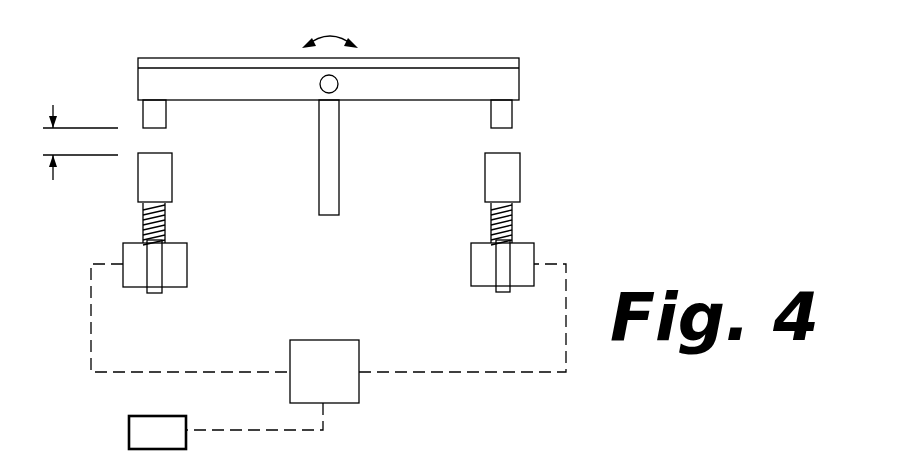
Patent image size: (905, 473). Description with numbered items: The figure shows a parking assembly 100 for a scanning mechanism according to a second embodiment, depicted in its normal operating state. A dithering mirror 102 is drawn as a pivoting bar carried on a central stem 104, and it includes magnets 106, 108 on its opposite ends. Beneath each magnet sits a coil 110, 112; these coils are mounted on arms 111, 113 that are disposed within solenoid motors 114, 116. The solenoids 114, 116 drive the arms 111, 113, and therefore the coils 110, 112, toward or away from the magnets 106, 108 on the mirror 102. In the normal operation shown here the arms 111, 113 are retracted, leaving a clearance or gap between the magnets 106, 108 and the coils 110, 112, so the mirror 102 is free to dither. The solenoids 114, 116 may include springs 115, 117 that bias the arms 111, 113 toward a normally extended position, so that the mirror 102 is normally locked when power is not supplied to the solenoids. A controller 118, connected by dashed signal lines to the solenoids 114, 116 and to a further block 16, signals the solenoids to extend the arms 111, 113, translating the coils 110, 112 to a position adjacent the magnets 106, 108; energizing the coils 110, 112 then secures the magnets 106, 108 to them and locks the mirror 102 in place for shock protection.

The parking assembly 100 is at (115, 45).
The dithering mirror 102 is at (423, 53).
The stem 104 is at (331, 150).
The magnet 106 is at (505, 117).
The magnet 108 is at (160, 116).
The coil 110 is at (510, 182).
The coil 112 is at (155, 180).
The arm 113 is at (153, 262).
The arm 111 is at (500, 258).
The solenoid motor 114 is at (525, 254).
The solenoid motor 116 is at (180, 268).
The spring 115 is at (492, 219).
The spring 117 is at (148, 220).
The controller 118 is at (318, 352).
The power supply 16 is at (162, 430).